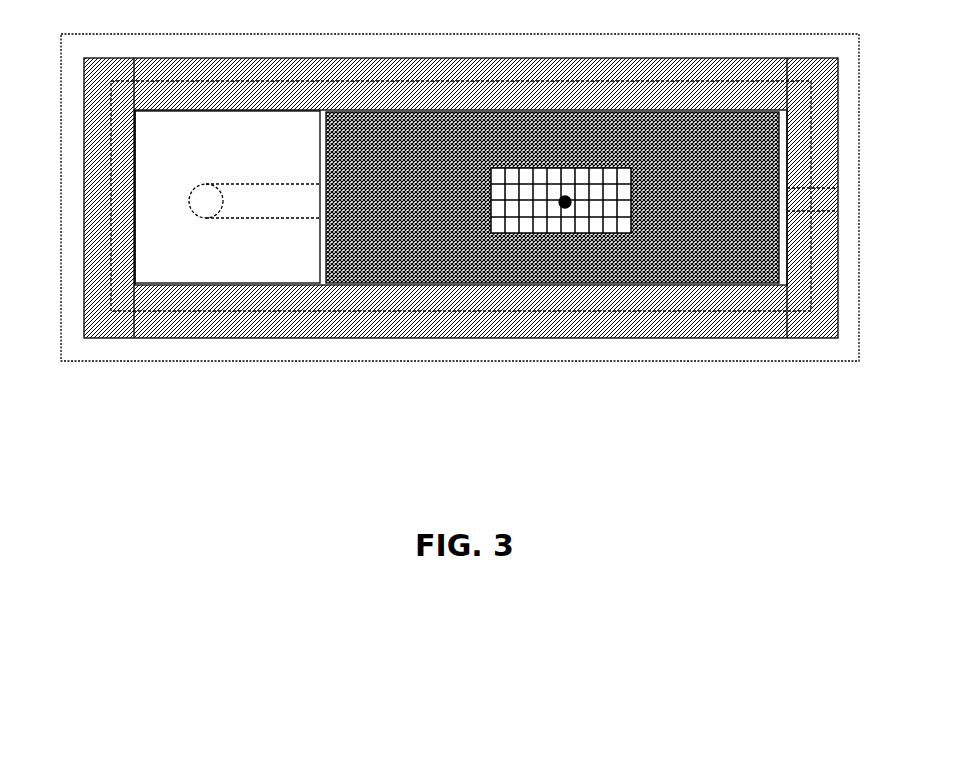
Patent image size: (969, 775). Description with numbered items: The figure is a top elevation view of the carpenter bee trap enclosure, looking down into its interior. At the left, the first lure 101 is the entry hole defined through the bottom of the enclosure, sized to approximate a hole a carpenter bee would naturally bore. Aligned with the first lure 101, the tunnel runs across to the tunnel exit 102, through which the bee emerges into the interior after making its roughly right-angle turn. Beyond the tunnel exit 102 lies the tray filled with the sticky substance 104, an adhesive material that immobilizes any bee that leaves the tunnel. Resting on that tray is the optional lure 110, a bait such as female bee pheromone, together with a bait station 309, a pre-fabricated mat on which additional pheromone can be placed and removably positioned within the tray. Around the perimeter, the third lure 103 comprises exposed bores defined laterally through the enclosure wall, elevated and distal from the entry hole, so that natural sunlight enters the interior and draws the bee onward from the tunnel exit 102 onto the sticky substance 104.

The third lure 103 is at (525, 51).
The first lure 101 is at (204, 187).
The tunnel exit 102 is at (310, 193).
The sticky substance 104 is at (421, 245).
The optional lure 110 is at (563, 205).
The bait station 309 is at (588, 153).